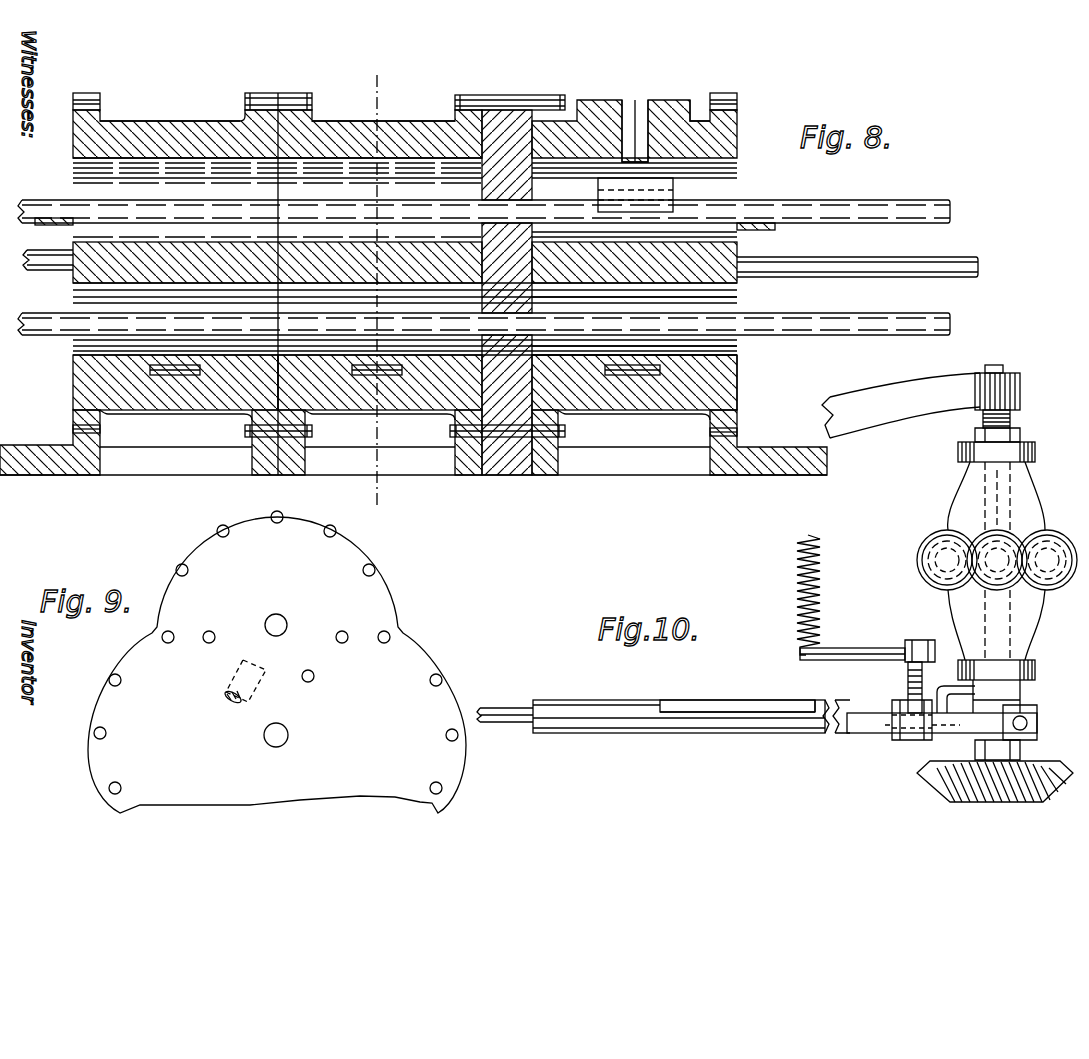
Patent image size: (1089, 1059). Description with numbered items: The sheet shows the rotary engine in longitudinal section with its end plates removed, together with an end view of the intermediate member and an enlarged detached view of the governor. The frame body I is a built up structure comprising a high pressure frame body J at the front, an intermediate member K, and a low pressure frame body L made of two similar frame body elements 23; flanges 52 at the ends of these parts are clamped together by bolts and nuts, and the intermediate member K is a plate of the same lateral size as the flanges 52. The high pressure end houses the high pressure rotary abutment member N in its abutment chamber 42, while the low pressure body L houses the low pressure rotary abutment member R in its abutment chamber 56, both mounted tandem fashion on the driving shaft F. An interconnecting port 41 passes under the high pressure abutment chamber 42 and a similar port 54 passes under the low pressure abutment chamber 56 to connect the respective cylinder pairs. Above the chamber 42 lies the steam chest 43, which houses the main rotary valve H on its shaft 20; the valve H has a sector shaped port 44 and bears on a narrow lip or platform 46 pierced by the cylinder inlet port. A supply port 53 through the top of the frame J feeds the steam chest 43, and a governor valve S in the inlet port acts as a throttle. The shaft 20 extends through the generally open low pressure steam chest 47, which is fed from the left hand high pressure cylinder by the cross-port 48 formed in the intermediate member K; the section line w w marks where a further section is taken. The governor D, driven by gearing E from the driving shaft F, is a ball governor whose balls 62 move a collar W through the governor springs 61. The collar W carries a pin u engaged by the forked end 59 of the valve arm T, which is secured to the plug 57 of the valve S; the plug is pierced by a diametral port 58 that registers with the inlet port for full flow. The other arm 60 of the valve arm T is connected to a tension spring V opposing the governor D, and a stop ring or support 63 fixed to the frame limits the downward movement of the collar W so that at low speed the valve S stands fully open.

In FIG. 8, the flanges 52 is at (85, 93).
In FIG. 8, the frame body elements 23 is at (235, 121).
In FIG. 8, the low pressure frame body L is at (327, 121).
In FIG. 8, the section line w w is at (396, 88).
In FIG. 8, the frame body I is at (445, 121).
In FIG. 8, the intermediate member K is at (505, 95).
In FIG. 9, the intermediate member K is at (395, 590).
In FIG. 8, the supply port 53 is at (635, 105).
In FIG. 8, the high pressure frame body J is at (700, 121).
In FIG. 8, the low pressure steam chest 47 is at (340, 185).
In FIG. 8, the steam chest 43 is at (737, 165).
In FIG. 8, the main rotary valve H is at (737, 190).
In FIG. 8, the shaft 20 is at (52, 205).
In FIG. 8, the sector shaped port 44 is at (598, 196).
In FIG. 8, the lip or platform 46 is at (737, 255).
In FIG. 8, the driving shaft F is at (48, 330).
In FIG. 8, the low pressure rotary abutment member R is at (110, 320).
In FIG. 8, the high pressure rotary abutment member N is at (737, 345).
In FIG. 8, the high pressure rotary abutment chamber 42 is at (737, 372).
In FIG. 8, the port 54 is at (170, 375).
In FIG. 8, the low pressure rotary abutment chamber 56 is at (222, 437).
In FIG. 8, the interconnecting port 41 is at (632, 375).
In FIG. 9, the cross-port 48 is at (236, 672).
In FIG. 10, the governor D is at (950, 508).
In FIG. 10, the governor balls 62 is at (935, 545).
In FIG. 10, the governor springs 61 is at (985, 605).
In FIG. 10, the tension spring V is at (822, 572).
In FIG. 10, the arm 60 is at (925, 665).
In FIG. 10, the valve arm T is at (908, 680).
In FIG. 10, the collar W is at (1022, 692).
In FIG. 10, the stop ring or support 63 is at (1038, 733).
In FIG. 10, the gearing E is at (930, 782).
In FIG. 10, the forked end 59 is at (908, 724).
In FIG. 10, the pin u is at (928, 738).
In FIG. 10, the plug 57 is at (728, 733).
In FIG. 10, the diametral port 58 is at (705, 700).
In FIG. 10, the governor valve S is at (762, 700).